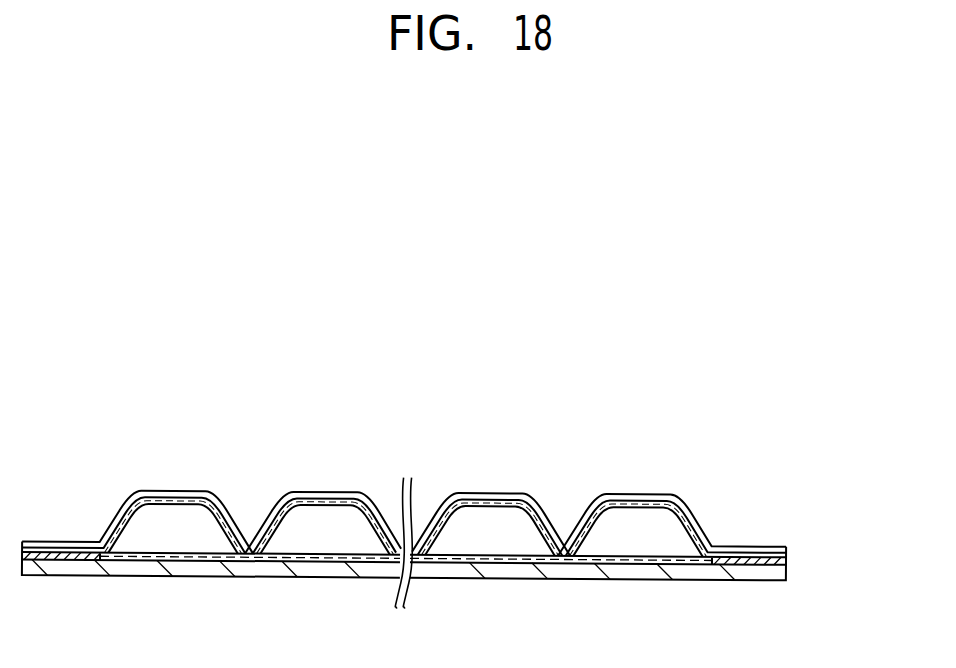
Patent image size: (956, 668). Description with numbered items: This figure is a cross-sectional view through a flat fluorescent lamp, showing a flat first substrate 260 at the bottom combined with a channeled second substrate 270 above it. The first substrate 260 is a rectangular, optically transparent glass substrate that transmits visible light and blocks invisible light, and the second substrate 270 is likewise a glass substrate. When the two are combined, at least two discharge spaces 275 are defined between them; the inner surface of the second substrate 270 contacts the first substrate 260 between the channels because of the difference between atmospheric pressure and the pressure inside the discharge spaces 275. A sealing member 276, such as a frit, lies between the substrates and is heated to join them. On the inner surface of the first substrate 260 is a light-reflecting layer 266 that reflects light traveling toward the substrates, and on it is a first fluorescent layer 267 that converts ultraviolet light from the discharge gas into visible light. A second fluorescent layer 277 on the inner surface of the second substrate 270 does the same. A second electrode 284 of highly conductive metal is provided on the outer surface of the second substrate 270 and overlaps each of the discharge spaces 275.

The first substrate 260 is at (444, 595).
The light-reflecting layer 266 is at (662, 559).
The first fluorescent layer 267 is at (588, 559).
The second substrate 270 is at (445, 490).
The discharge spaces 275 is at (331, 527).
The sealing member 276 is at (444, 600).
The second fluorescent layer 277 is at (486, 508).
The second electrode 284 is at (636, 491).